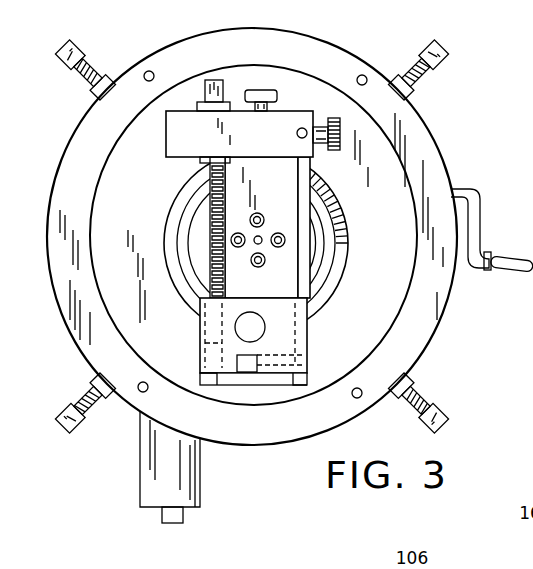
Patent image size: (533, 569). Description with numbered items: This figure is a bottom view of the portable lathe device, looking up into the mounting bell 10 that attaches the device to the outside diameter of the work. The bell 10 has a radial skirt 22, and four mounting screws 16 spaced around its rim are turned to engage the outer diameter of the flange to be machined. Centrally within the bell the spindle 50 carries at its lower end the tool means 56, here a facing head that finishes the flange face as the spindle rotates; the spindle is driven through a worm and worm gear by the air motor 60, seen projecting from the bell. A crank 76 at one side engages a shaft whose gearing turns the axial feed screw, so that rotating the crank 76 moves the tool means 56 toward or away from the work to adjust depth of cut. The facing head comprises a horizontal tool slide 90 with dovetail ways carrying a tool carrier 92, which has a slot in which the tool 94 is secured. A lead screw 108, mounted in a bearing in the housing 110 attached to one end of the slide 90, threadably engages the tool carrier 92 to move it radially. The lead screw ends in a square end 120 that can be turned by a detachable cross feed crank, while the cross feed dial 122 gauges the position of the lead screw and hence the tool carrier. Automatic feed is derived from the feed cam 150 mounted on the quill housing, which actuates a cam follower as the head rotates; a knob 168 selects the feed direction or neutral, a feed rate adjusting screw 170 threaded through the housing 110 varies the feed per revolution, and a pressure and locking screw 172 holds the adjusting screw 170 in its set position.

The bell 10 is at (440, 330).
The mounting screws 16 is at (88, 68).
The radial skirt 22 is at (263, 444).
The spindle 50 is at (317, 245).
The tool means 56 is at (202, 194).
The air motor 60 is at (147, 458).
The crank 76 is at (457, 191).
The tool slide 90 is at (283, 278).
The tool carrier 92 is at (300, 328).
The tool 94 is at (246, 357).
The lead screw 108 is at (213, 218).
The housing 110 is at (189, 141).
The square end 120 is at (209, 88).
The cross feed dial 122 is at (231, 104).
The feed cam 150 is at (342, 212).
The knob 168 is at (269, 90).
The feed rate adjusting screw 170 is at (335, 117).
The pressure and locking screw 172 is at (296, 133).